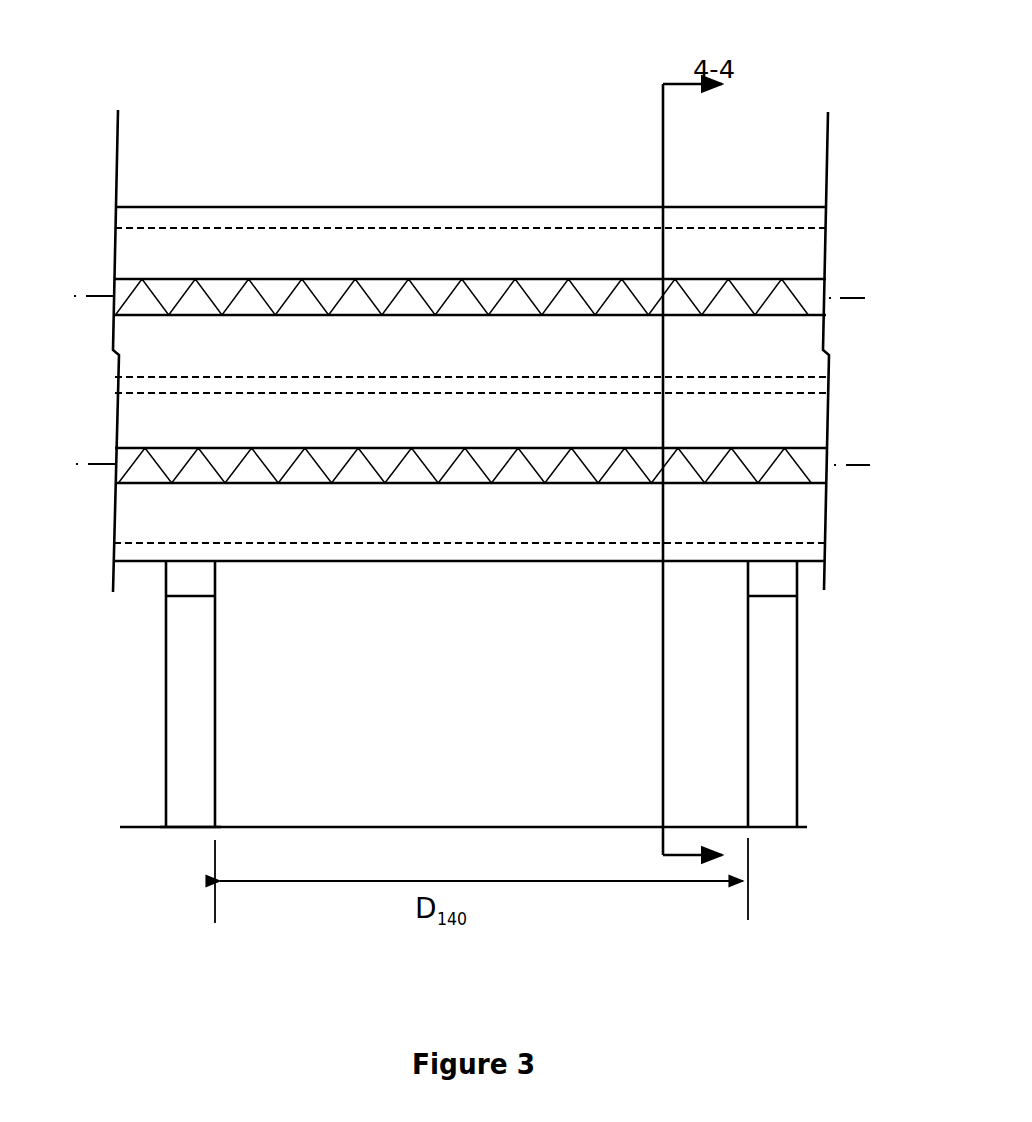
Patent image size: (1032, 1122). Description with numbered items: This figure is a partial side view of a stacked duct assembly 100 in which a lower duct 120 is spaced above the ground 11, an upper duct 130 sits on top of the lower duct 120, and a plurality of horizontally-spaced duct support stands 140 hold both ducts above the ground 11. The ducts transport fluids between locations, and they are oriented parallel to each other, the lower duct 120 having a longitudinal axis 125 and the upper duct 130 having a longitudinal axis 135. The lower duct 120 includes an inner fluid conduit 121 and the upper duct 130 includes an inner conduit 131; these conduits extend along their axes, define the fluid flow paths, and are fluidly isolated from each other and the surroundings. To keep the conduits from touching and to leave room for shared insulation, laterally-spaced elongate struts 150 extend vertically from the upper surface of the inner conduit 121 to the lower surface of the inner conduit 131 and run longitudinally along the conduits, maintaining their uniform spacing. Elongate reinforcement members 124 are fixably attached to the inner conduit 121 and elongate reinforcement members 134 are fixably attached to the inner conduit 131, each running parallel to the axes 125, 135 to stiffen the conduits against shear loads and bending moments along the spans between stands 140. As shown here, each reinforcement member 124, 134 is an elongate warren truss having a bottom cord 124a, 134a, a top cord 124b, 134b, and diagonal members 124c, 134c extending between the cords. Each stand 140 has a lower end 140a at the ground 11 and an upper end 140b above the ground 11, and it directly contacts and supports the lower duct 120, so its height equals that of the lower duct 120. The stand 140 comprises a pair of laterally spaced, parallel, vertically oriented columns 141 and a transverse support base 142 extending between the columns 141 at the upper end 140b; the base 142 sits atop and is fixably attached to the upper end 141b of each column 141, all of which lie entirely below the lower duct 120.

The stacked duct assembly 100 is at (186, 102).
The upper duct 130 is at (388, 207).
The inner conduit 131 is at (548, 228).
The reinforcement member 134 is at (470, 304).
The bottom cord 134a is at (455, 317).
The top cord 134b is at (433, 280).
The diagonal members 134c is at (338, 300).
The longitudinal axis 135 is at (92, 294).
The strut 150 is at (290, 385).
The reinforcement member 124 is at (470, 473).
The bottom cord 124a is at (477, 485).
The top cord 124b is at (487, 448).
The diagonal members 124c is at (400, 462).
The longitudinal axis 125 is at (851, 465).
The inner fluid conduit 121 is at (277, 543).
The lower duct 120 is at (425, 562).
The duct support stand 140 is at (234, 649).
The column 141 is at (217, 743).
The support base 142 is at (203, 587).
The lower end 140a is at (192, 827).
The upper end 140b is at (190, 562).
The upper end 141b is at (177, 605).
The ground 11 is at (477, 819).